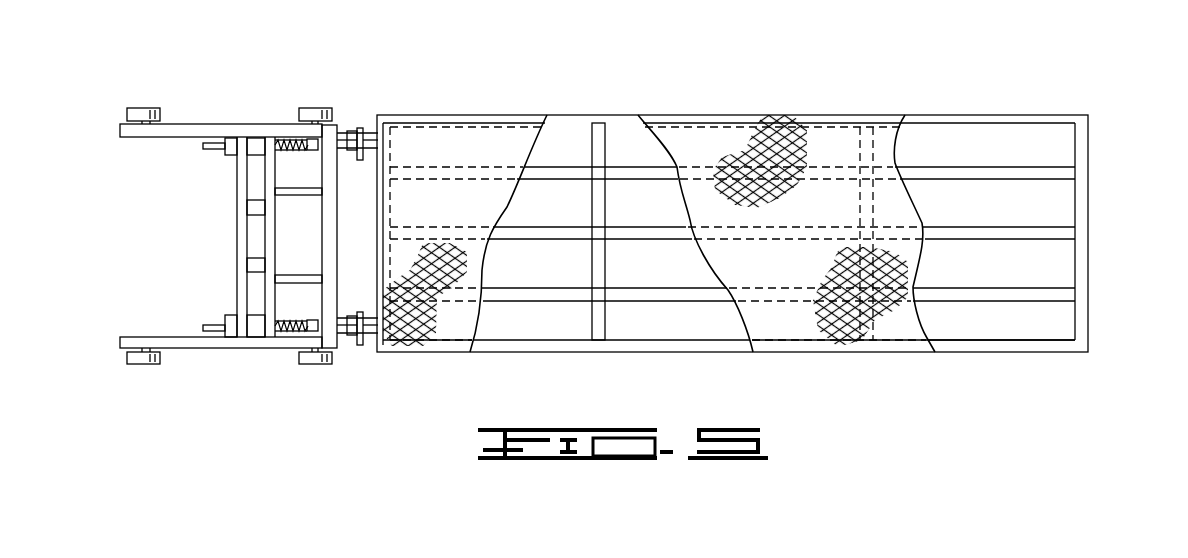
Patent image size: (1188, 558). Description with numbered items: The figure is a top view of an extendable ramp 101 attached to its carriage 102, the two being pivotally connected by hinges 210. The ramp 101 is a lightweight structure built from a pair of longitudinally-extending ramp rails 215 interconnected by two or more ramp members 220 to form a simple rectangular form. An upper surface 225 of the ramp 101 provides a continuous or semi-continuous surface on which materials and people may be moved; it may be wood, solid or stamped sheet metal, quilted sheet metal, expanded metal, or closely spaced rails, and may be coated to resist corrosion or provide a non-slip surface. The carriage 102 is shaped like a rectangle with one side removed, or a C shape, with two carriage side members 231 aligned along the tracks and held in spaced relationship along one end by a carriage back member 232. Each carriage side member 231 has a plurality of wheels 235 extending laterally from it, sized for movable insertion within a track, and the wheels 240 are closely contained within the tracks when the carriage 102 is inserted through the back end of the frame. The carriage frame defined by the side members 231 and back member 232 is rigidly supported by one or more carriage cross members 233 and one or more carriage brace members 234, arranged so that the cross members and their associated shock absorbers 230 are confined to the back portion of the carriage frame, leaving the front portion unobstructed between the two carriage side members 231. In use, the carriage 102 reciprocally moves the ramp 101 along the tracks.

The ramp 101 is at (198, 55).
The carriage 102 is at (822, 92).
The hinges 210 is at (364, 90).
The ramp rails 215 is at (618, 115).
The ramp members 220 is at (389, 147).
The upper surface 225 is at (422, 218).
The shock absorbers 230 is at (283, 140).
The carriage side members 231 is at (182, 123).
The carriage back member 232 is at (327, 241).
The carriage cross members 233 is at (268, 228).
The carriage brace members 234 is at (282, 188).
The wheels 235 is at (100, 250).
The wheels 240 is at (127, 115).